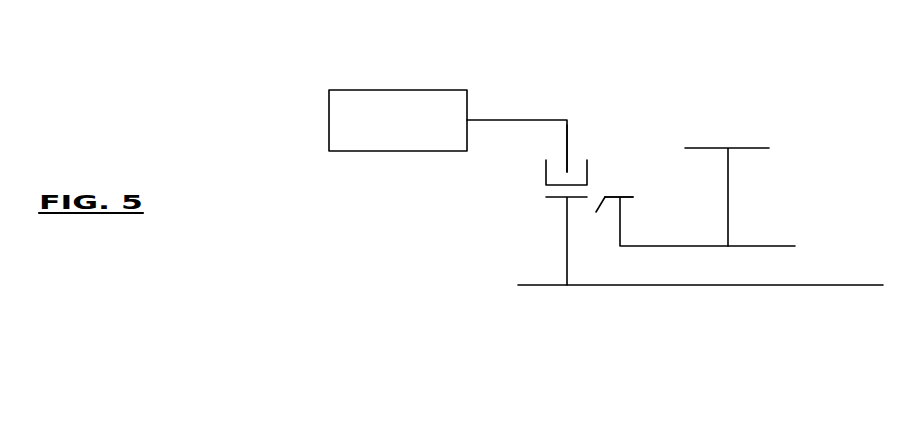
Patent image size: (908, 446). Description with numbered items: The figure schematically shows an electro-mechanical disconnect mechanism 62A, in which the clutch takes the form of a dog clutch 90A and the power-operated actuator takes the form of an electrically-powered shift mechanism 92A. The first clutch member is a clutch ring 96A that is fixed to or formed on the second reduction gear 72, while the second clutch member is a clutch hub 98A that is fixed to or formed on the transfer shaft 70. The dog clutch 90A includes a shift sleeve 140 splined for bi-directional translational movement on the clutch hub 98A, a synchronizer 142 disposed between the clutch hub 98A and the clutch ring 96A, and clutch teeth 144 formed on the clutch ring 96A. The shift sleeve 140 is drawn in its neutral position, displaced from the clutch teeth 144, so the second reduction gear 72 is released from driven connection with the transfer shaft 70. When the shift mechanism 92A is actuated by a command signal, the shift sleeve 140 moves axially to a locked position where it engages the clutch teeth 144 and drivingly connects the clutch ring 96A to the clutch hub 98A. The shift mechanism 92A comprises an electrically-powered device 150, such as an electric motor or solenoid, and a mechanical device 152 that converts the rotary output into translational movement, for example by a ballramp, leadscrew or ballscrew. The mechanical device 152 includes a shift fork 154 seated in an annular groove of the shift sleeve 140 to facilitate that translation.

The electrically-powered device 150 is at (378, 97).
The mechanical device 152 is at (510, 120).
The shift fork 154 is at (568, 138).
The shift sleeve 140 is at (546, 170).
The clutch hub 98A is at (567, 236).
The clutch ring 96A is at (620, 222).
The clutch teeth 144 is at (633, 197).
The synchronizer 142 is at (602, 208).
The second reduction gear 72 is at (748, 148).
The transfer shaft 70 is at (849, 285).
The electrically-powered shift mechanism 92A is at (494, 89).
The dog clutch 90A is at (603, 157).
The disconnect mechanism 62A is at (712, 78).